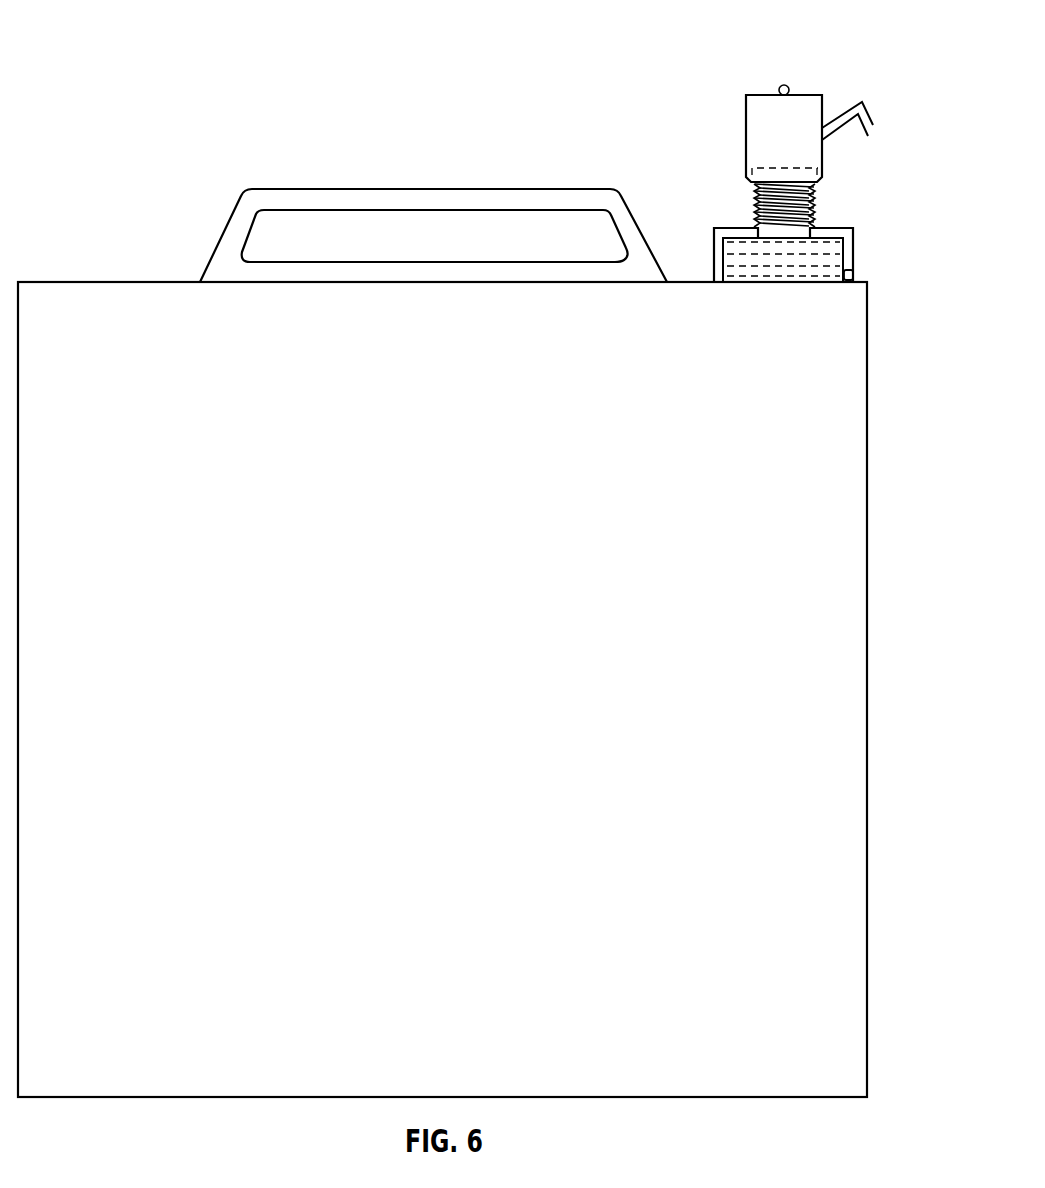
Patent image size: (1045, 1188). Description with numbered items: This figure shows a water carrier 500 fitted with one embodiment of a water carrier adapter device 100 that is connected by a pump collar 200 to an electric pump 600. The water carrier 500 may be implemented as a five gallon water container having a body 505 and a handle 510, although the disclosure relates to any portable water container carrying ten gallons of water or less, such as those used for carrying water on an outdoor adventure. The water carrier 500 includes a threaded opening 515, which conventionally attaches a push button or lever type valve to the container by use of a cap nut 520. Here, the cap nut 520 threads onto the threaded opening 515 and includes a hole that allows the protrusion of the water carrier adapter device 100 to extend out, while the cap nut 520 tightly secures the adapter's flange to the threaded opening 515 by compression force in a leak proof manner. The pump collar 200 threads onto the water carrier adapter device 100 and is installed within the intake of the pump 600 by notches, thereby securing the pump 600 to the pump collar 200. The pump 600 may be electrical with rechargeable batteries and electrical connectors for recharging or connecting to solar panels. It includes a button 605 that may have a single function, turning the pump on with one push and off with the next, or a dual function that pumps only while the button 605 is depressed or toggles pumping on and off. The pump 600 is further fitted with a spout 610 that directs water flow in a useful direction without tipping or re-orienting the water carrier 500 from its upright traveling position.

The water carrier 500 is at (151, 46).
The body 505 is at (88, 281).
The handle 510 is at (337, 188).
The water carrier adapter device 100 is at (722, 227).
The pump collar 200 is at (815, 184).
The cap nut 520 is at (855, 232).
The threaded opening 515 is at (855, 275).
The electric pump 600 is at (752, 118).
The button 605 is at (785, 84).
The spout 610 is at (866, 104).